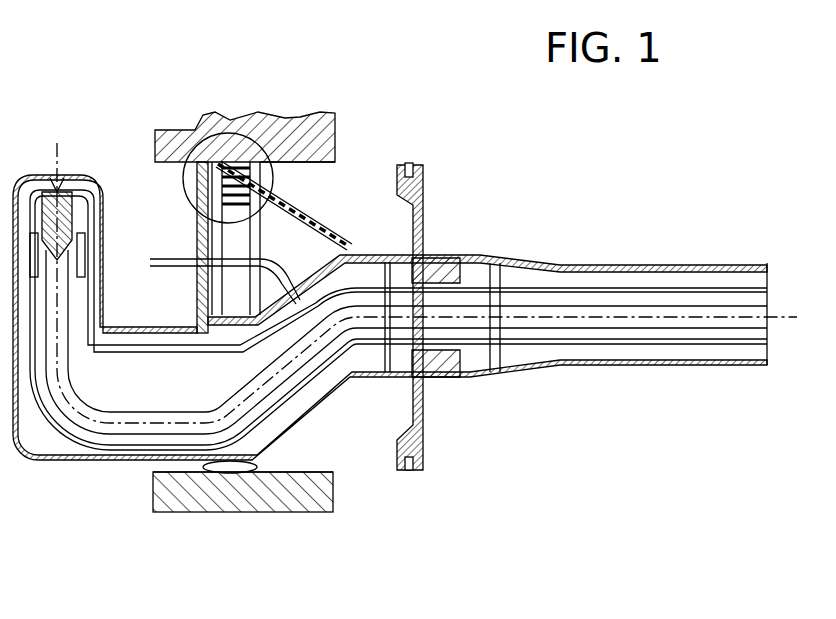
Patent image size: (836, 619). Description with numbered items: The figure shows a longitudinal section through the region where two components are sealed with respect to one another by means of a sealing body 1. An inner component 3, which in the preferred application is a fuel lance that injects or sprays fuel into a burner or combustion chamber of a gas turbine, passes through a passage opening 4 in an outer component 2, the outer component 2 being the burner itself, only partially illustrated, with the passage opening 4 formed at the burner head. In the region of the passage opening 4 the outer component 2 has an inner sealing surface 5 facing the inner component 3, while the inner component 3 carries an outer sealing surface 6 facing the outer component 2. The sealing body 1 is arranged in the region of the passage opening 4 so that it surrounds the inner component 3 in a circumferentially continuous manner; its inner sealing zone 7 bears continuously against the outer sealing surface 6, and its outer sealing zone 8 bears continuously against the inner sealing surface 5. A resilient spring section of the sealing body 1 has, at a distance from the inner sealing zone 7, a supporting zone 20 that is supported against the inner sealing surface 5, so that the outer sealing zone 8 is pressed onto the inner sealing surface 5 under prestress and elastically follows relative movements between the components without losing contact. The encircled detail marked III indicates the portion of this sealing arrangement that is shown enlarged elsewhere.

The sealing body 1 is at (274, 243).
The outer component 2 is at (179, 115).
The inner component 3 is at (560, 249).
The passage opening 4 is at (172, 171).
The inner sealing surface 5 is at (308, 163).
The outer sealing surface 6 is at (200, 186).
The inner sealing zone 7 is at (213, 163).
The outer sealing zone 8 is at (221, 470).
The supporting zone 20 is at (238, 165).
The detail section III is at (273, 136).